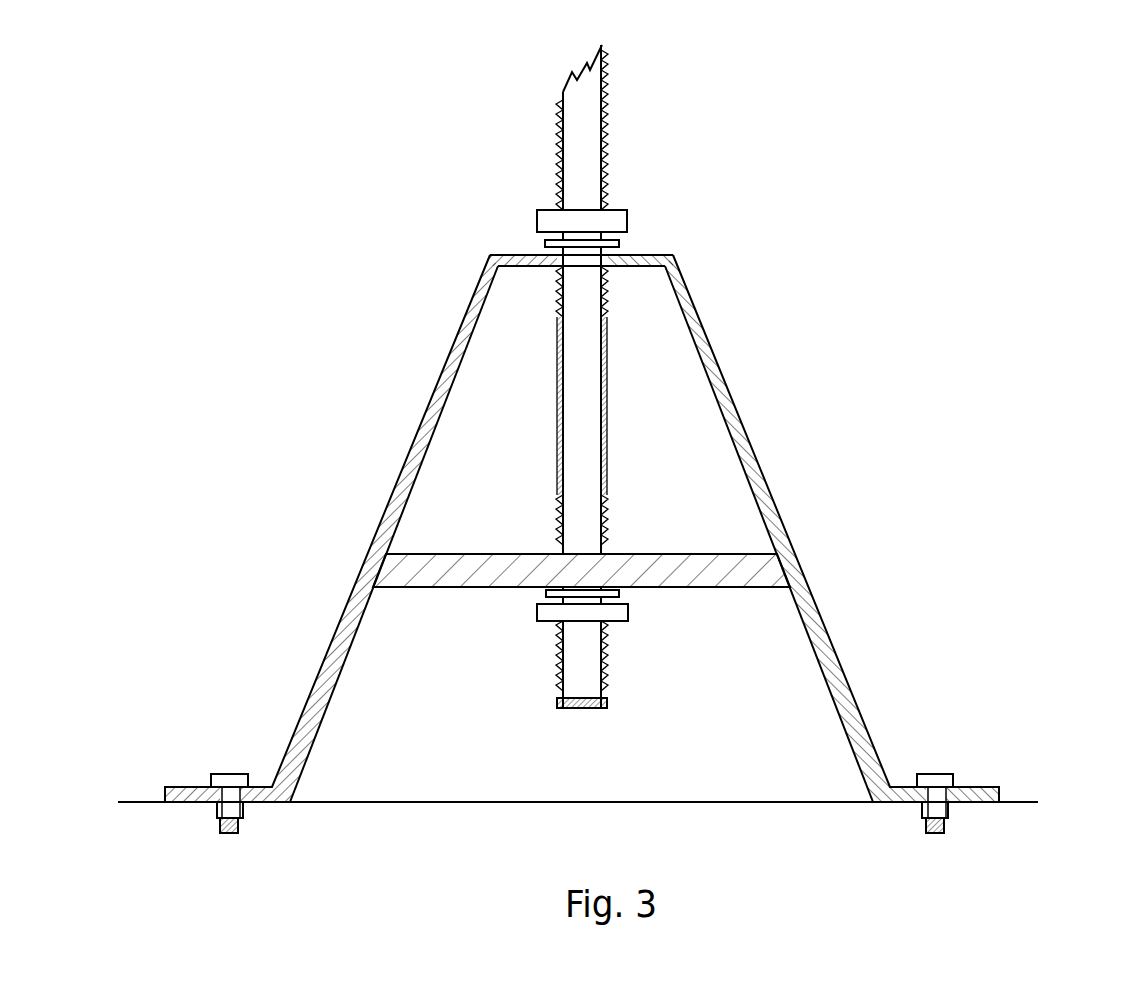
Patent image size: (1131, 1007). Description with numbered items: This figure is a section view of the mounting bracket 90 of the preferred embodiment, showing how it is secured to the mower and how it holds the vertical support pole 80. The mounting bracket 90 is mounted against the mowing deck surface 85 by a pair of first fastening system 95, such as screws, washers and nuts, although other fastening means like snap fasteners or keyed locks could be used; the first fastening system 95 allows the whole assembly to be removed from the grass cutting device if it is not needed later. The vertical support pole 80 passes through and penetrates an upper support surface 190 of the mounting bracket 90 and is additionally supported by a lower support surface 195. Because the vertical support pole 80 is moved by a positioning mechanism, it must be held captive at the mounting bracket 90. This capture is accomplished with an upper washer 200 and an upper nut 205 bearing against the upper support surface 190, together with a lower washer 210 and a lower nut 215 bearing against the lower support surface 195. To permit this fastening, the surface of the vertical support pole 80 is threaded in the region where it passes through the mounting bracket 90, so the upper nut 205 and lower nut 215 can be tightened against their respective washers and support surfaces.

The vertical support pole 80 is at (558, 158).
The mowing deck surface 85 is at (1015, 800).
The mounting bracket 90 is at (758, 464).
The first fastening system 95 is at (233, 773).
The upper support surface 190 is at (675, 256).
The lower support surface 195 is at (518, 554).
The upper washer 200 is at (620, 245).
The upper nut 205 is at (622, 212).
The lower washer 210 is at (540, 589).
The lower nut 215 is at (515, 610).